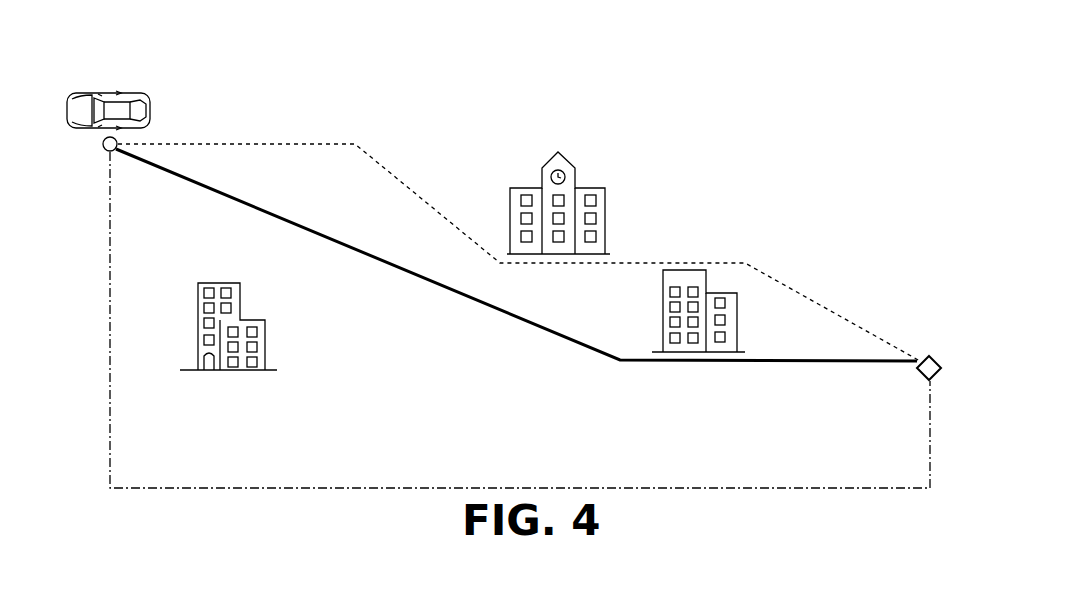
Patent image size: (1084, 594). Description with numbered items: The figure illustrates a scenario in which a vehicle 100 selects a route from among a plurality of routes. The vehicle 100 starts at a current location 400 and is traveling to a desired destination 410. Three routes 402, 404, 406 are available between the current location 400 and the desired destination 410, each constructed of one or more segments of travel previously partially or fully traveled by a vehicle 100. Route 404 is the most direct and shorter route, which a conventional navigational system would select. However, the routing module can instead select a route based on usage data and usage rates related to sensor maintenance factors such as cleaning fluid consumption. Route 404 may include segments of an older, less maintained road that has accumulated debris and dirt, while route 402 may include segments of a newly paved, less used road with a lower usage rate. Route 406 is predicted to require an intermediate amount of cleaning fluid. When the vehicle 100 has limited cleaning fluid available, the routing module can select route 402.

The vehicle 100 is at (150, 103).
The current location 400 is at (104, 150).
The route 402 is at (108, 437).
The route 404 is at (540, 328).
The route 406 is at (372, 155).
The desired destination 410 is at (930, 354).